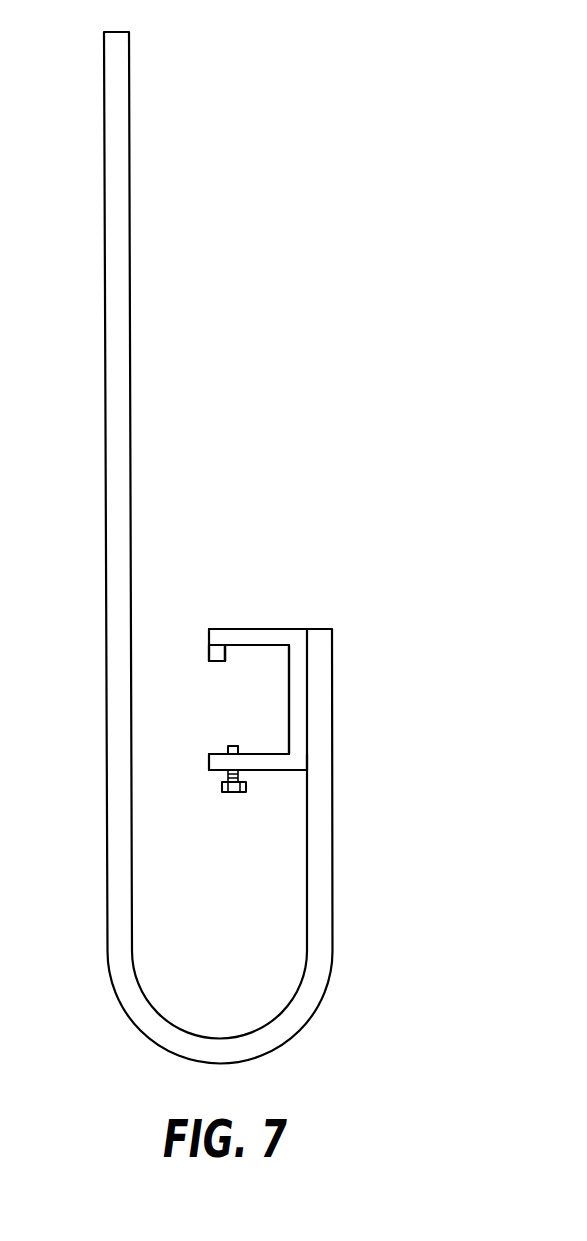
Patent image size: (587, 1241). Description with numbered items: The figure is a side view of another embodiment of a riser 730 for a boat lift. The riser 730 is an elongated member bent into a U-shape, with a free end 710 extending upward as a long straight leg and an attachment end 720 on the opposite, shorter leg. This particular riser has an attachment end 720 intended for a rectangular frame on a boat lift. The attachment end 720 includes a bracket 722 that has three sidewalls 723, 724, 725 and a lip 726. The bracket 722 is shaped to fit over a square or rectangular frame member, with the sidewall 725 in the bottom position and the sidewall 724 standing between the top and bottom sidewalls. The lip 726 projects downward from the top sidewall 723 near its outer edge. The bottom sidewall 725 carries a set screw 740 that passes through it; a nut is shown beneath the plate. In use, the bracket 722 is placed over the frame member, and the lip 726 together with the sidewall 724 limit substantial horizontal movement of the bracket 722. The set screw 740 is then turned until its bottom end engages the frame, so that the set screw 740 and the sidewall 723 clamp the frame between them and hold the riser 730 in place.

The free end 710 is at (104, 136).
The attachment end 720 is at (299, 629).
The bracket 722 is at (252, 628).
The sidewall 723 is at (238, 648).
The sidewall 724 is at (286, 700).
The sidewall 725 is at (222, 754).
The lip 726 is at (206, 649).
The riser 730 is at (287, 70).
The set screw 740 is at (233, 795).